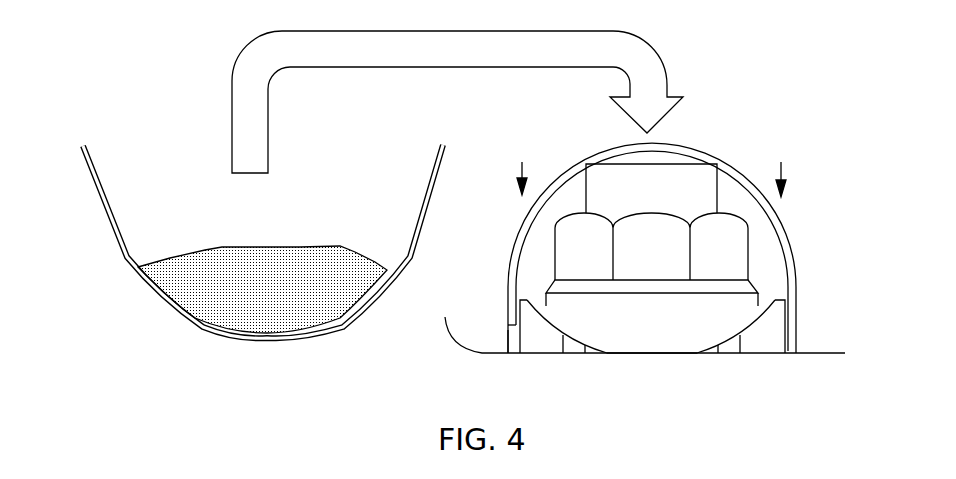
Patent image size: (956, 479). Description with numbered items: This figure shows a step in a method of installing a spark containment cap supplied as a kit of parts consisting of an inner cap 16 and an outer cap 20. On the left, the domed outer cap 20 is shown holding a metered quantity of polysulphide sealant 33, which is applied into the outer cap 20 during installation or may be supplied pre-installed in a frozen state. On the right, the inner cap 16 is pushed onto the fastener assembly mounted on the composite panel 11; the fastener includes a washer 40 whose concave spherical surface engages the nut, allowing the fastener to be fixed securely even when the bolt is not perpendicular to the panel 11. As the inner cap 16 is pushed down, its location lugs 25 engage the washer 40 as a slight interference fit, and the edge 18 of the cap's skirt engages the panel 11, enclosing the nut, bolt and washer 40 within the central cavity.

The outer cap 20 is at (133, 268).
The polysulphide sealant 33 is at (253, 247).
The inner cap 16 is at (714, 153).
The composite panel 11 is at (817, 352).
The edge 18 is at (512, 353).
The location lugs 25 is at (520, 353).
The washer 40 is at (760, 353).